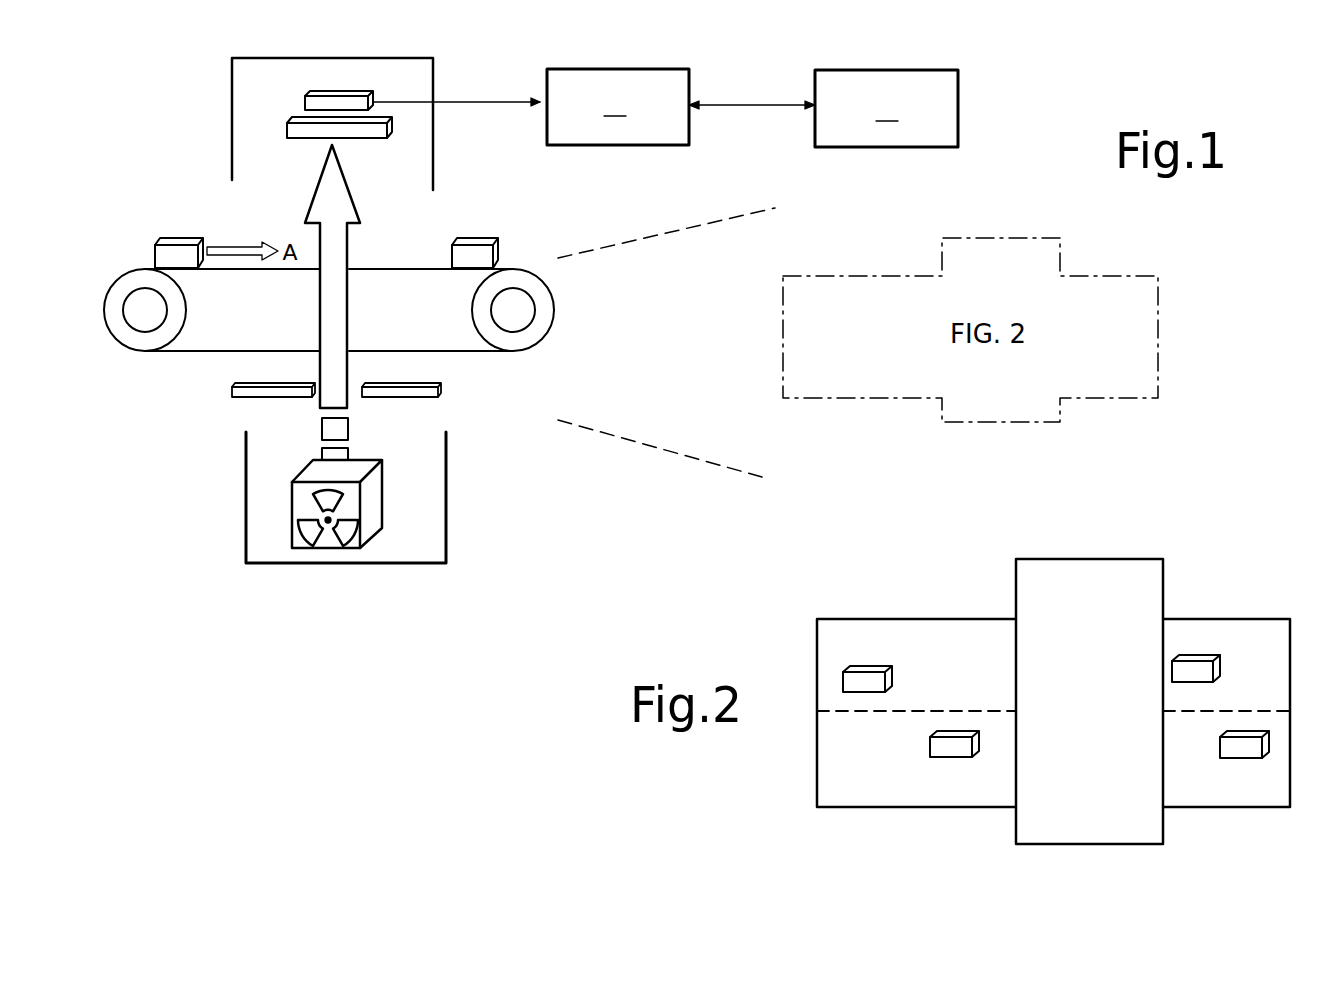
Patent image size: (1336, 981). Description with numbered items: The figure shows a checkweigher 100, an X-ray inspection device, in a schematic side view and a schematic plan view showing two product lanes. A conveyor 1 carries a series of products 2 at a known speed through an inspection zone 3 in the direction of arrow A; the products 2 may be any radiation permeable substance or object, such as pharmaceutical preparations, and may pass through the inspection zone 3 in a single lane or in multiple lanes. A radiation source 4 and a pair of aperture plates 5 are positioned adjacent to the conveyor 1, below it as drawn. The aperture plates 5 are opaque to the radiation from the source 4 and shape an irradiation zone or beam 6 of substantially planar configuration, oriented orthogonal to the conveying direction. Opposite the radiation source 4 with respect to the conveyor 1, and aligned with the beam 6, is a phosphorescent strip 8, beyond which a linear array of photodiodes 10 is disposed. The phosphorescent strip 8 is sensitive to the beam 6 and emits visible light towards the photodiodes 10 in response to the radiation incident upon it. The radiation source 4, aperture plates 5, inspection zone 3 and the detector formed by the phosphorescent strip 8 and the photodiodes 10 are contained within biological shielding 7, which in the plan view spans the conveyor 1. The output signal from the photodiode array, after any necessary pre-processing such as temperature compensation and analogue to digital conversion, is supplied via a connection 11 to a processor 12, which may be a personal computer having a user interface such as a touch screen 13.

In FIG. 1, the conveyor 1 is at (466, 352).
In FIG. 2, the conveyor 1 is at (1198, 788).
In FIG. 1, the products 2 is at (175, 245).
In FIG. 2, the products 2 is at (862, 670).
In FIG. 1, the inspection zone 3 is at (367, 251).
In FIG. 1, the radiation source 4 is at (353, 507).
In FIG. 1, the aperture plates 5 is at (248, 393).
In FIG. 1, the irradiation zone or beam 6 is at (350, 186).
In FIG. 2, the biological shielding 7 is at (1163, 588).
In FIG. 1, the phosphorescent strip 8 is at (287, 128).
In FIG. 1, the photodiodes 10 is at (336, 92).
In FIG. 1, the connection 11 is at (513, 101).
In FIG. 1, the processor 12 is at (618, 107).
In FIG. 1, the touch screen 13 is at (886, 108).
In FIG. 1, the checkweigher 100 is at (1037, 77).